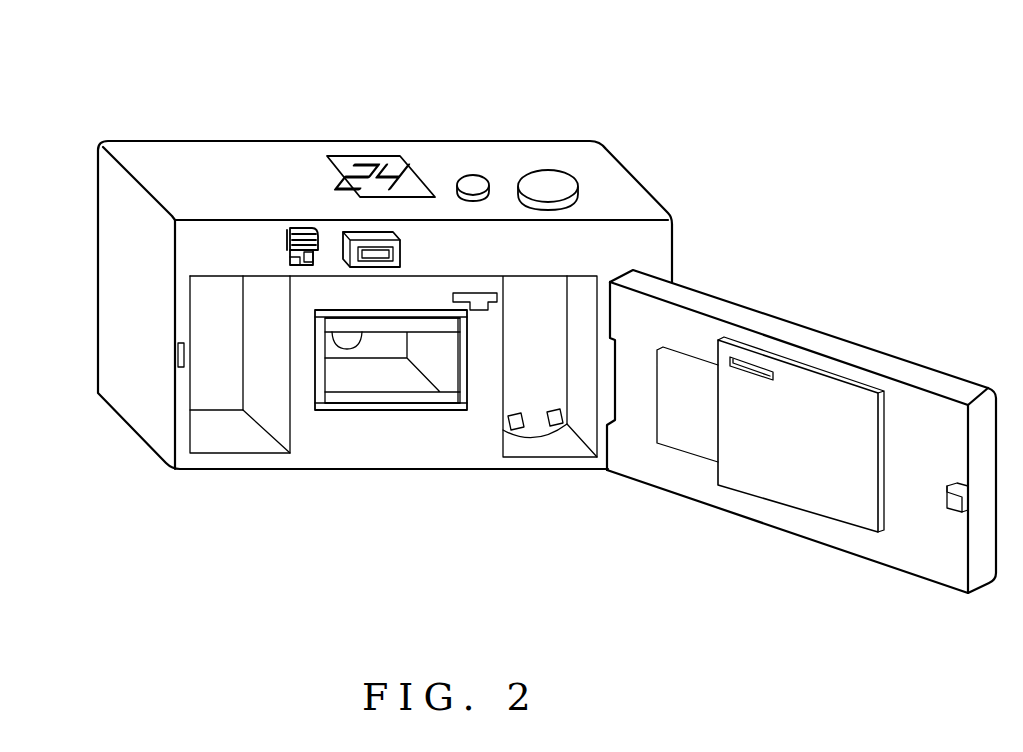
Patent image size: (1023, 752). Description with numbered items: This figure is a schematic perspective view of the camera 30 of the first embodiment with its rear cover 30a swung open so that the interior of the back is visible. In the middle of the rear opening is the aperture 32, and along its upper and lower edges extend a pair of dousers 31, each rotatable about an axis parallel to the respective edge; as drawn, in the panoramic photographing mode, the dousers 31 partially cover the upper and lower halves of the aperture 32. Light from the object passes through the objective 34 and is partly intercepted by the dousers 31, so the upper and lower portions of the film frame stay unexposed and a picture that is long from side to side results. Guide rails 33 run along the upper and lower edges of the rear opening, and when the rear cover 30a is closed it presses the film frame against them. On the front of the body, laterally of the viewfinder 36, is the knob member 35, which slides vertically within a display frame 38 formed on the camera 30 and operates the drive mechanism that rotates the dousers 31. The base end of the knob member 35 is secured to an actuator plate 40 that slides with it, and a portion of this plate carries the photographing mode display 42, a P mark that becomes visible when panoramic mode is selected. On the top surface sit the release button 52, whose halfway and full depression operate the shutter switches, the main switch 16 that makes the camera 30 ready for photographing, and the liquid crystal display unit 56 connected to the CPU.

The camera 30 is at (586, 138).
The rear cover 30a is at (853, 340).
The dousers 31 is at (450, 325).
The aperture 32 is at (388, 378).
The guide rails 33 is at (330, 303).
The objective 34 is at (348, 340).
The knob member 35 is at (307, 228).
The viewfinder 36 is at (352, 233).
The display frame 38 is at (287, 239).
The actuator plate 40 is at (290, 257).
The photographing mode display 42 is at (314, 256).
The release button 52 is at (546, 174).
The main switch 16 is at (473, 176).
The liquid crystal display unit 56 is at (389, 153).